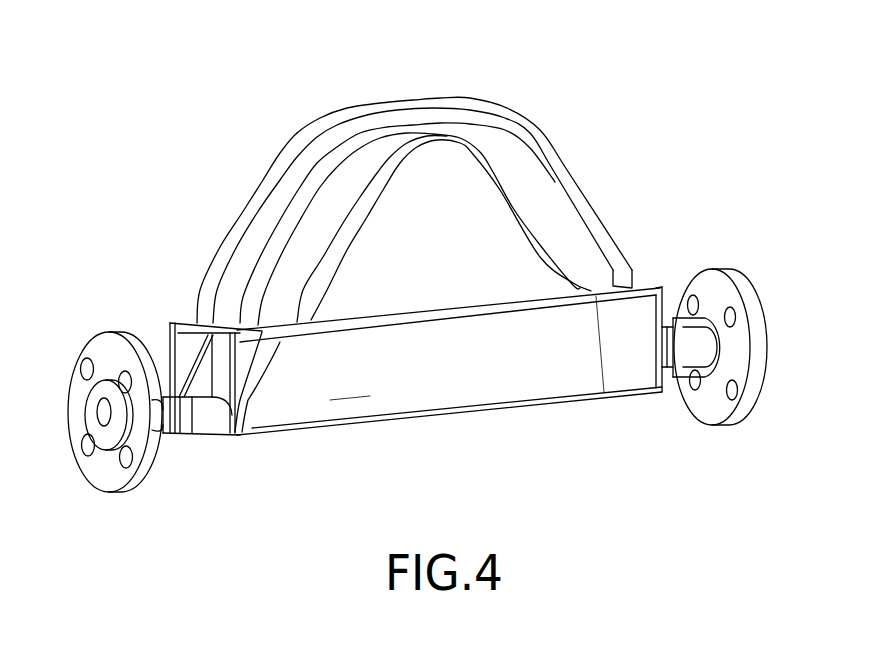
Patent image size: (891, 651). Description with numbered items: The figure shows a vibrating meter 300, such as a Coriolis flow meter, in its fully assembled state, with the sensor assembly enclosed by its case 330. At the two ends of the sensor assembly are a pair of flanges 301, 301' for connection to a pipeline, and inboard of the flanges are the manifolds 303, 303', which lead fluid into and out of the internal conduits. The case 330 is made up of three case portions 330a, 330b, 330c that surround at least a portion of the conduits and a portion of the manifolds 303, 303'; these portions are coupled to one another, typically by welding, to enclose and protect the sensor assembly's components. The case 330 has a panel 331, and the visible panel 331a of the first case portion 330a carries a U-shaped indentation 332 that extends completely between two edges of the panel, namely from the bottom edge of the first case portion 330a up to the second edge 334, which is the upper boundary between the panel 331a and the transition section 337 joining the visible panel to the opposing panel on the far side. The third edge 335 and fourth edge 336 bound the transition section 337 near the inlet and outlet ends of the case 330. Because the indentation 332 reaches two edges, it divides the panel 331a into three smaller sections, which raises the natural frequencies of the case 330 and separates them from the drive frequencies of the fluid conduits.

The vibrating meter 300 is at (797, 95).
The flange 301 is at (99, 386).
The flange 301' is at (761, 332).
The manifold 303 is at (196, 335).
The manifold 303' is at (682, 287).
The case 330 is at (243, 125).
The first case portion 330a is at (580, 190).
The case portion 330b is at (350, 398).
The case portion 330c is at (268, 435).
The panel 331 is at (500, 303).
The panel 331a is at (323, 233).
The indentation 332 is at (453, 203).
The second edge 334 is at (435, 127).
The third edge 335 is at (230, 432).
The fourth edge 336 is at (598, 302).
The transition section 337 is at (258, 237).